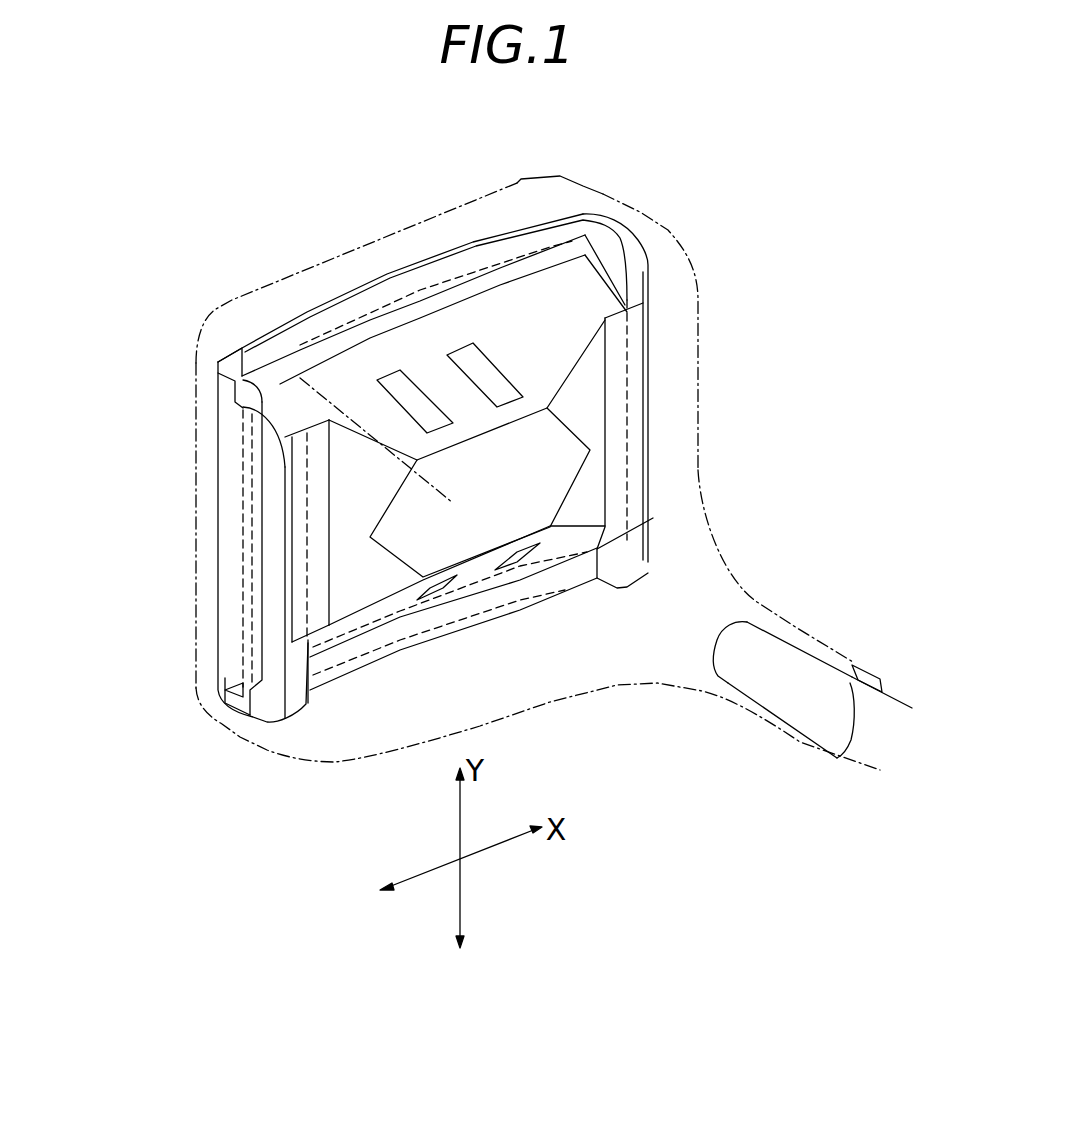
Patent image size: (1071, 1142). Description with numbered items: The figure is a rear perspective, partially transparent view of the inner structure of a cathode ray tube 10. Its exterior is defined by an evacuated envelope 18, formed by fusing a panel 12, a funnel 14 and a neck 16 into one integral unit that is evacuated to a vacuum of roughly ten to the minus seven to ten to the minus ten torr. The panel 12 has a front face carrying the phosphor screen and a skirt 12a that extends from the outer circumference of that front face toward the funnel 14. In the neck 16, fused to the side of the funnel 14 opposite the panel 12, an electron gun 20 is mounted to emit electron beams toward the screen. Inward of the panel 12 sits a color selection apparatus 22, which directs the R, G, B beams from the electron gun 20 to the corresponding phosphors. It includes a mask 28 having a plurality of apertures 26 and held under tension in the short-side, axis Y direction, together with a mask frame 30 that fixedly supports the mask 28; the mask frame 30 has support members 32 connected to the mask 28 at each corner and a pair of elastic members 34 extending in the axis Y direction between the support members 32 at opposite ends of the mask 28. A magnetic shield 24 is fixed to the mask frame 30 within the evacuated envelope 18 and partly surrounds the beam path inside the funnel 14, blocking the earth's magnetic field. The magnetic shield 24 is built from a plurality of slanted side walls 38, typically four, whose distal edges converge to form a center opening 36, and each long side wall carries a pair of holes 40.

The cathode ray tube 10 is at (853, 268).
The panel 12 is at (362, 237).
The skirt 12a is at (199, 520).
The funnel 14 is at (701, 356).
The neck 16 is at (812, 643).
The evacuated envelope 18 is at (688, 414).
The electron gun 20 is at (840, 683).
The color selection apparatus 22 is at (524, 226).
The magnetic shield 24 is at (313, 372).
The apertures 26 is at (243, 457).
The mask 28 is at (220, 612).
The mask frame 30 is at (590, 230).
The support members 32 is at (463, 237).
The elastic members 34 is at (280, 650).
The center opening 36 is at (528, 482).
The side walls 38 is at (567, 338).
The holes 40 is at (417, 397).